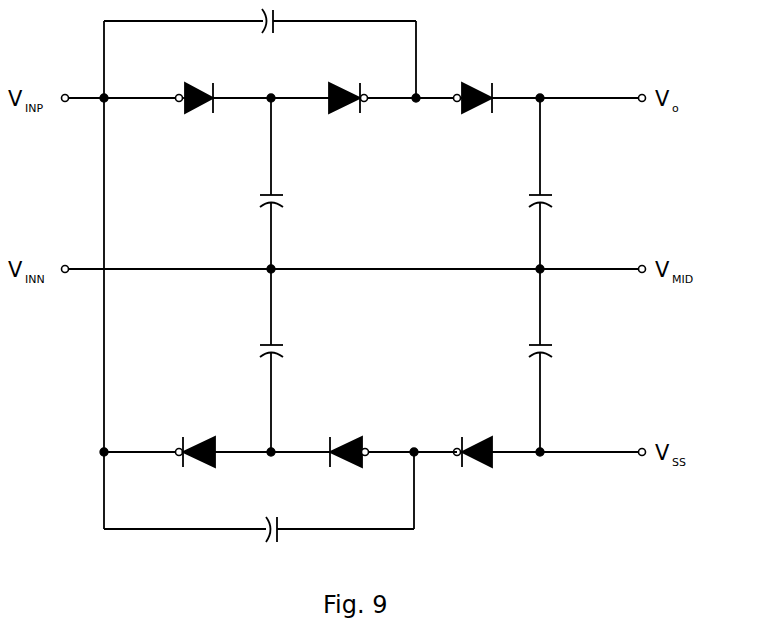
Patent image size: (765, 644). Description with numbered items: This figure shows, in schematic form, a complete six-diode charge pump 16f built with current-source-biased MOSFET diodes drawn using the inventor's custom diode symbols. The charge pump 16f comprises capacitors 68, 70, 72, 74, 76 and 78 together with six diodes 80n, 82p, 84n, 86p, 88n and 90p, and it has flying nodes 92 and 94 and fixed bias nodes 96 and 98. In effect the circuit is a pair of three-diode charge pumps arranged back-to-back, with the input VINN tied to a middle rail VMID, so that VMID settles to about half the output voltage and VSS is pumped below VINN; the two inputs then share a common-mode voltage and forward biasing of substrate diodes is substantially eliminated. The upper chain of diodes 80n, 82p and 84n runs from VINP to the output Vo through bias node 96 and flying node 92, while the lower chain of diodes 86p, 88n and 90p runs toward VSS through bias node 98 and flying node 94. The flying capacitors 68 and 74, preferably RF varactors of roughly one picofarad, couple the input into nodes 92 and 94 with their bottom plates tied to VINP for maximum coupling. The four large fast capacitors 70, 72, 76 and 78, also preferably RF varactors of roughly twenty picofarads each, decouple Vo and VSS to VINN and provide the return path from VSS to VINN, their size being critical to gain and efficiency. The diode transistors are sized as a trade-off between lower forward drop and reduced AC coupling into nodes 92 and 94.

The flying capacitor 68 is at (265, 37).
The capacitor 70 is at (287, 200).
The capacitor 72 is at (526, 201).
The flying capacitor 74 is at (270, 517).
The capacitor 76 is at (285, 348).
The capacitor 78 is at (526, 349).
The diode 80n is at (200, 113).
The diode 82p is at (345, 112).
The diode 84n is at (478, 112).
The diode 86p is at (200, 437).
The diode 88n is at (345, 437).
The diode 90p is at (480, 437).
The flying node 92 is at (416, 102).
The flying node 94 is at (414, 448).
The fixed bias node 96 is at (275, 101).
The fixed bias node 98 is at (275, 449).
The 6-diode charge pump 16f is at (452, 494).